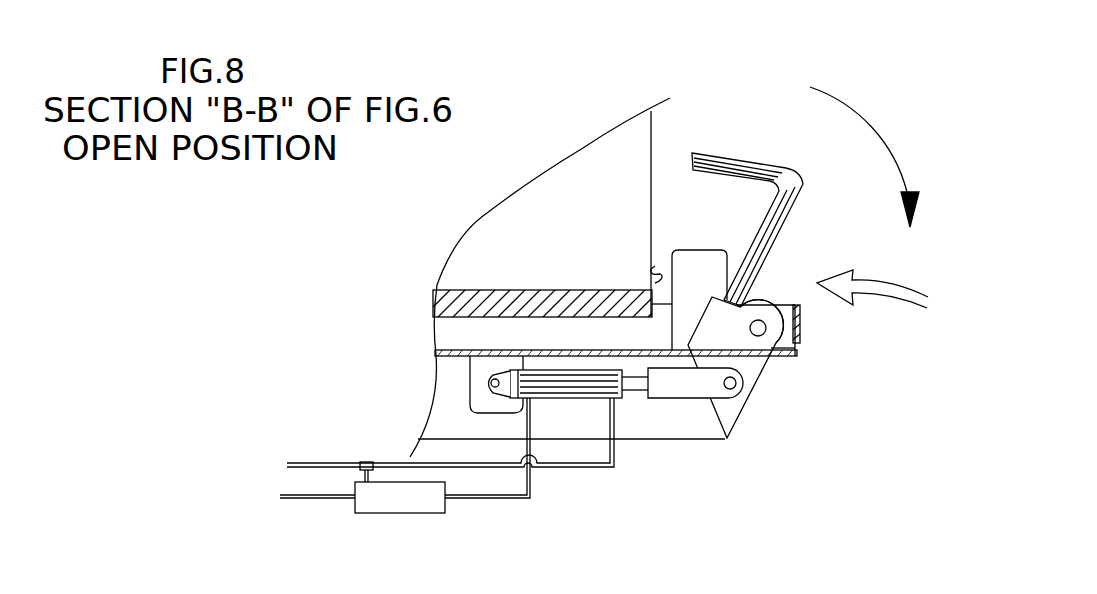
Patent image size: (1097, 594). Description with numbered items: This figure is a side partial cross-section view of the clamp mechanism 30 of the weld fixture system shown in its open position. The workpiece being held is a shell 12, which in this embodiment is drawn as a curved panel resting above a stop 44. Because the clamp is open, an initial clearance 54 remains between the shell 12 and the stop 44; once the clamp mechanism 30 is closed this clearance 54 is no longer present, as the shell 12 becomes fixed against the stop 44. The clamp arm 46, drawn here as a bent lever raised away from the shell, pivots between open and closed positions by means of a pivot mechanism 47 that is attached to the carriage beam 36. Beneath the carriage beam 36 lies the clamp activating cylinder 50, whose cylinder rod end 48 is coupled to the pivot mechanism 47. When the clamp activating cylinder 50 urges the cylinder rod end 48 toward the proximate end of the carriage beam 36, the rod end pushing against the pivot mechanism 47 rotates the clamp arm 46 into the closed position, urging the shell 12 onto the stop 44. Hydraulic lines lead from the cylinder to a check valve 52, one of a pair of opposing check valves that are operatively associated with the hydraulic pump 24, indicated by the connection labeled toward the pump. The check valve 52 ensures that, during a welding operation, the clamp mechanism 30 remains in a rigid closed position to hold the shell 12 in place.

The shell 12 is at (487, 213).
The clearance 54 is at (655, 268).
The stop 44 is at (703, 250).
The clamp arm 46 is at (787, 223).
The clamp mechanism 30 is at (889, 297).
The pivot mechanism 47 is at (762, 363).
The carriage beam 36 is at (750, 417).
The cylinder rod end 48 is at (693, 398).
The clamp activating cylinder 50 is at (563, 400).
The check valve 52 is at (433, 513).
The hydraulic pump 24 is at (286, 484).